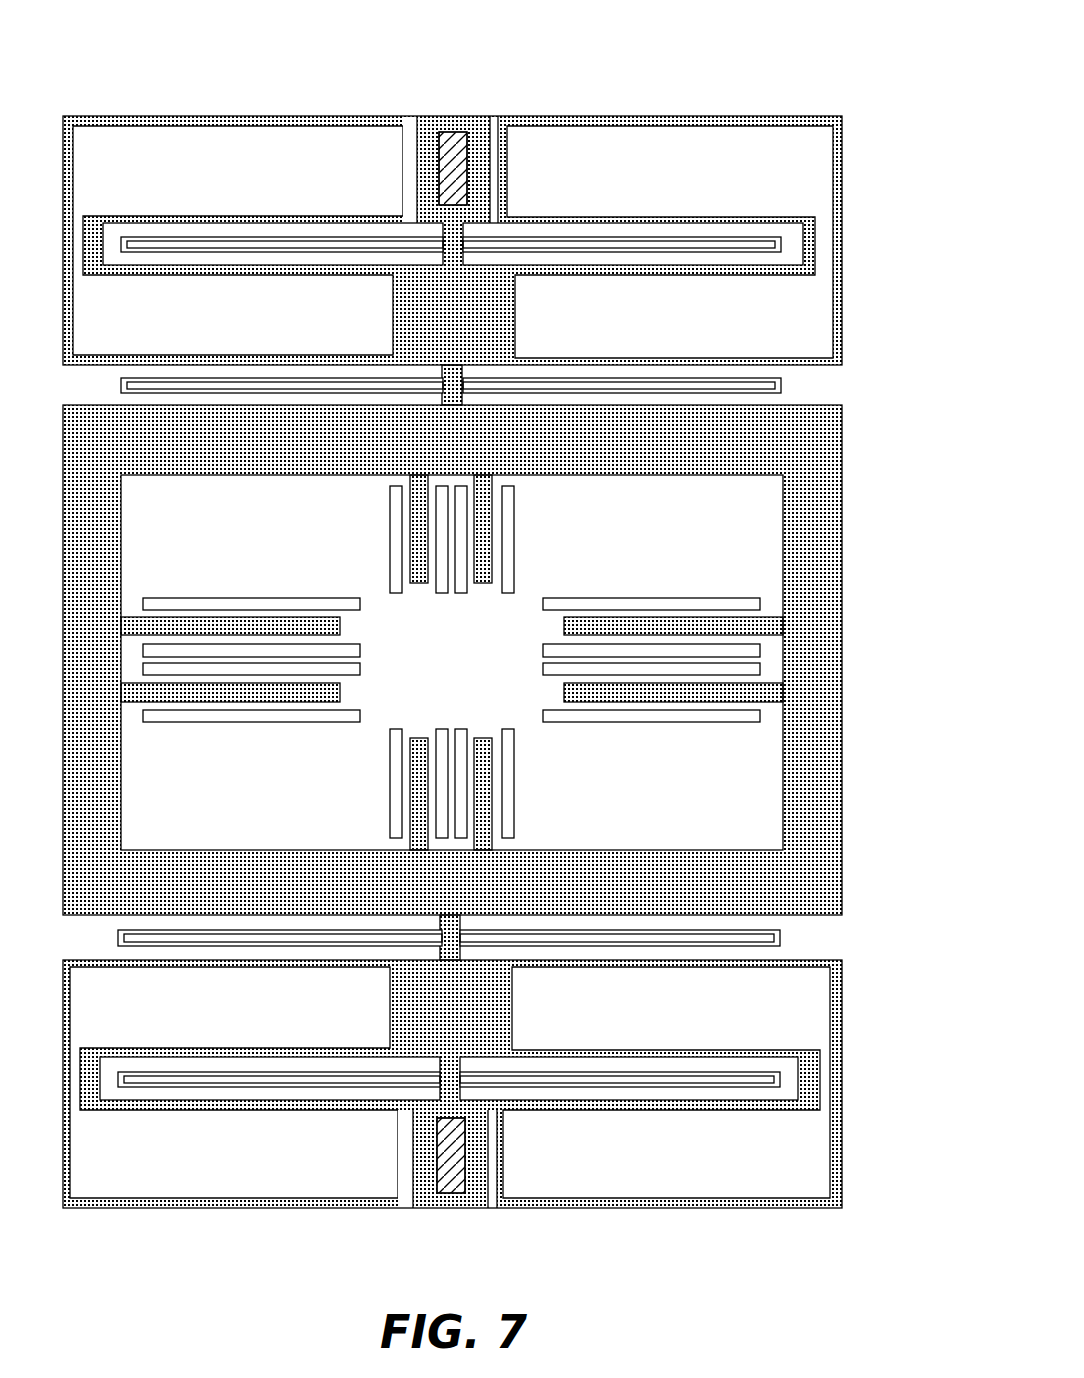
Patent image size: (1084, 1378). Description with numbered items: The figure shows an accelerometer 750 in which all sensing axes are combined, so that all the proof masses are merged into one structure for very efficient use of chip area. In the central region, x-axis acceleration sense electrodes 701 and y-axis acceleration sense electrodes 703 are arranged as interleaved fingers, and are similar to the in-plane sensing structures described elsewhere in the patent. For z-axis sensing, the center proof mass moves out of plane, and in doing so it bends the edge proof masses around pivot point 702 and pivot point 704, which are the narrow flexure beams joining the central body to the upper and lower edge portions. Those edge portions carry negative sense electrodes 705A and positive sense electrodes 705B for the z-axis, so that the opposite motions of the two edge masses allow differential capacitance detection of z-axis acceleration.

The x-axis acceleration sense electrodes 701 is at (472, 550).
The pivot point 702 is at (800, 937).
The y-axis acceleration sense electrodes 703 is at (196, 642).
The pivot point 704 is at (800, 1080).
The negative sense electrodes (Z) 705A is at (140, 322).
The positive sense electrodes (Z) 705B is at (738, 167).
The accelerometer 750 is at (507, 646).